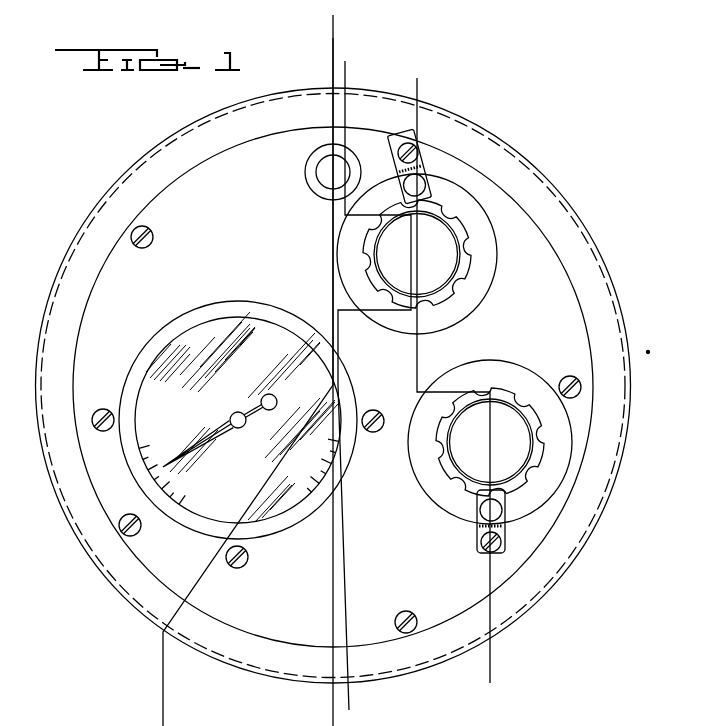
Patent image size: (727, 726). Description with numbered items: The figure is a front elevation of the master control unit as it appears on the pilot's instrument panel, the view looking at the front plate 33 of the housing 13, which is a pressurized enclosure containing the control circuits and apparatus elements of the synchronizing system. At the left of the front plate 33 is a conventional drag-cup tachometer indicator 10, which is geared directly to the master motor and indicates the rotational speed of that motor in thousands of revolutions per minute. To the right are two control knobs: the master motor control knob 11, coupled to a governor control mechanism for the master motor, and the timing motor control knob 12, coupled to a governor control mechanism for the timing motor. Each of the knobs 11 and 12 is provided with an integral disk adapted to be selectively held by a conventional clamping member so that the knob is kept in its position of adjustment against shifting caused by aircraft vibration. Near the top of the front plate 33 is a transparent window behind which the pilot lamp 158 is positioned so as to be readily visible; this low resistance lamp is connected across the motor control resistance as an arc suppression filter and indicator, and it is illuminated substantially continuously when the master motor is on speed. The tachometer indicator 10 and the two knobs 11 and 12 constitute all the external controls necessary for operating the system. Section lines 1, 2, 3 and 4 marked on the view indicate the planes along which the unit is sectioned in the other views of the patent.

The section line 1- 1 is at (345, 61).
The section line 2- 2 is at (333, 38).
The section line 3- 3 is at (333, 15).
The section line 4- 4 is at (417, 78).
The drag-cup tachometer indicator 10 is at (202, 365).
The master motor control knob 11 is at (534, 462).
The timing motor control knob 12 is at (447, 291).
The housing 13 is at (50, 420).
The front plate 33 is at (539, 318).
The pilot lamp 158 is at (320, 172).